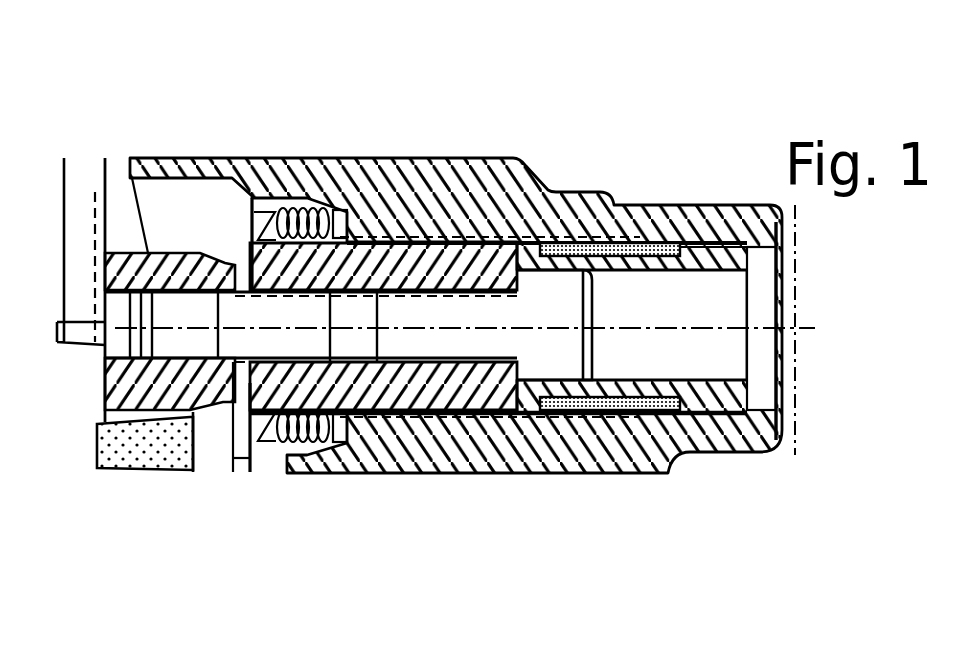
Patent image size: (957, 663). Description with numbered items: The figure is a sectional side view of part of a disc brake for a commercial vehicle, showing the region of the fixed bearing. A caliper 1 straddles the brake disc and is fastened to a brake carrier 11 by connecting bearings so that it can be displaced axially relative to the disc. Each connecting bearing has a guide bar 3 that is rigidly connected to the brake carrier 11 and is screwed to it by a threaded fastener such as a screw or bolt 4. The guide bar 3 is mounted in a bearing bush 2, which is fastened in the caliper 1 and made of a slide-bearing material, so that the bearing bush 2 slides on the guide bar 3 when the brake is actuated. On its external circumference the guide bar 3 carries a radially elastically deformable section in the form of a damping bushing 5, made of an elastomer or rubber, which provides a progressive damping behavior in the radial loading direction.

The caliper 1 is at (499, 196).
The bearing bush 2 is at (525, 238).
The guide bar 3 is at (410, 380).
The screw or bolt 4 is at (430, 305).
The damping bushing 5 is at (627, 420).
The brake carrier 11 is at (133, 270).